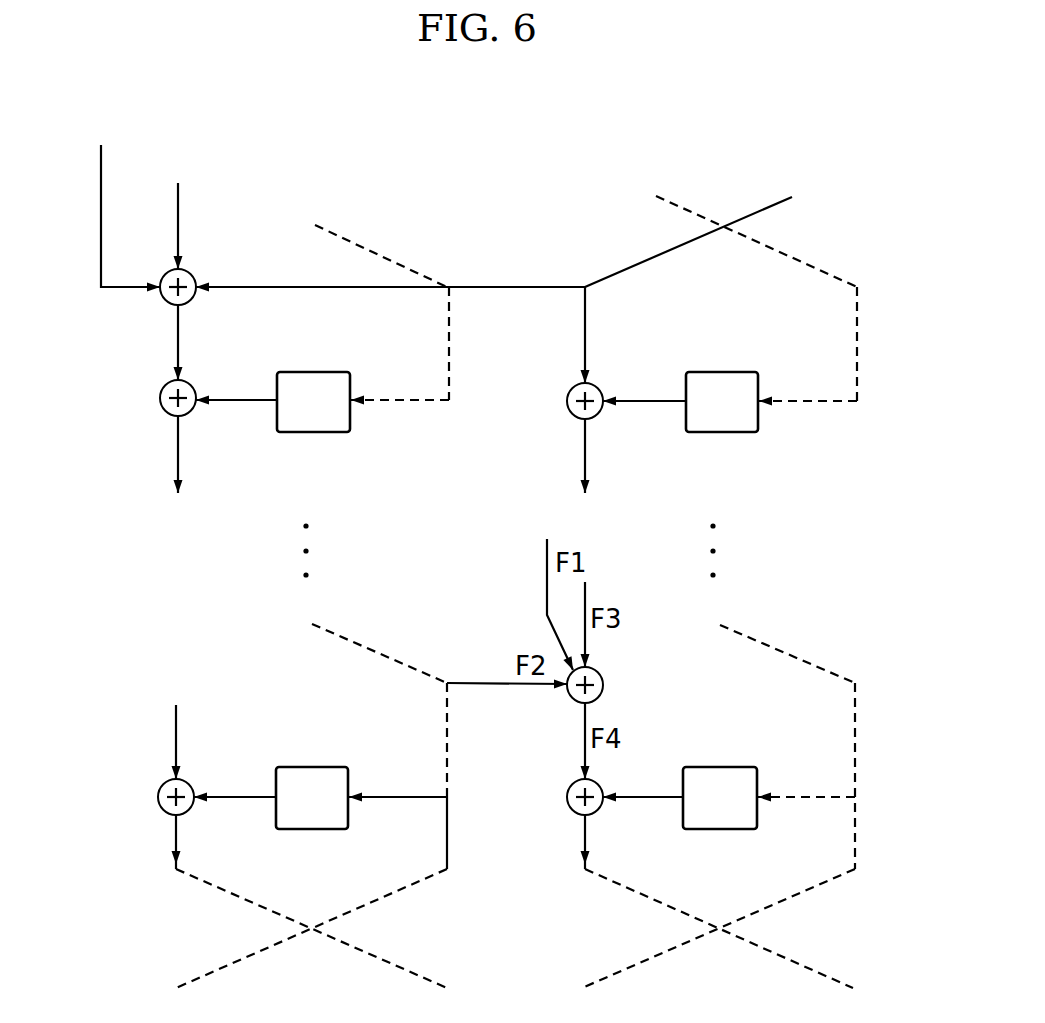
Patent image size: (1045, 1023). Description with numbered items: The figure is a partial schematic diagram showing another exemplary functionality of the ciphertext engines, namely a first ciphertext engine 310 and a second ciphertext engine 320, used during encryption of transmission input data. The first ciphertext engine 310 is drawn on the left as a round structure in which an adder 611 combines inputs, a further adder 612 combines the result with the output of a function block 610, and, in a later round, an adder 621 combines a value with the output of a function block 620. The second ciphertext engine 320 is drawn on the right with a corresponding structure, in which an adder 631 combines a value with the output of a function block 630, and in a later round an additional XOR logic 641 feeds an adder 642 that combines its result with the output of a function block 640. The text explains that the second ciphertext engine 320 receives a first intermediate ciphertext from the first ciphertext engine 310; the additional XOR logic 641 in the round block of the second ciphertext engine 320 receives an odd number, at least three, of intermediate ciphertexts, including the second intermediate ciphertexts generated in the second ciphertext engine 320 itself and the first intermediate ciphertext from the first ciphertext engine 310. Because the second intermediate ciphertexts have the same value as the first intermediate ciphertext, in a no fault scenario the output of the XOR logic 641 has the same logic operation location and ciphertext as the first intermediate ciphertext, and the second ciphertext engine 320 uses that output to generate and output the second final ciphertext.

The first ciphertext engine 310 is at (126, 127).
The second ciphertext engine 320 is at (838, 210).
The function block F 610 is at (290, 372).
The adder 611 is at (192, 298).
The adder 612 is at (191, 412).
The function block F 620 is at (290, 767).
The adder 621 is at (189, 810).
The function block F 630 is at (700, 372).
The adder 631 is at (598, 414).
The function block F 640 is at (700, 767).
The additional XOR logic 641 is at (598, 698).
The adder 642 is at (598, 810).